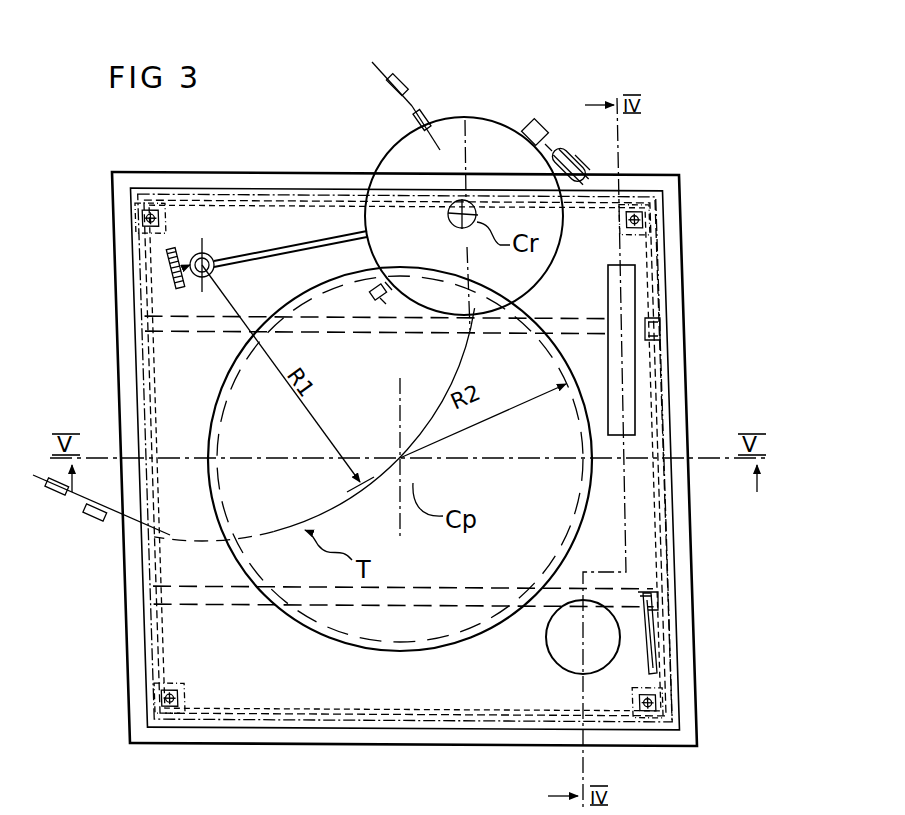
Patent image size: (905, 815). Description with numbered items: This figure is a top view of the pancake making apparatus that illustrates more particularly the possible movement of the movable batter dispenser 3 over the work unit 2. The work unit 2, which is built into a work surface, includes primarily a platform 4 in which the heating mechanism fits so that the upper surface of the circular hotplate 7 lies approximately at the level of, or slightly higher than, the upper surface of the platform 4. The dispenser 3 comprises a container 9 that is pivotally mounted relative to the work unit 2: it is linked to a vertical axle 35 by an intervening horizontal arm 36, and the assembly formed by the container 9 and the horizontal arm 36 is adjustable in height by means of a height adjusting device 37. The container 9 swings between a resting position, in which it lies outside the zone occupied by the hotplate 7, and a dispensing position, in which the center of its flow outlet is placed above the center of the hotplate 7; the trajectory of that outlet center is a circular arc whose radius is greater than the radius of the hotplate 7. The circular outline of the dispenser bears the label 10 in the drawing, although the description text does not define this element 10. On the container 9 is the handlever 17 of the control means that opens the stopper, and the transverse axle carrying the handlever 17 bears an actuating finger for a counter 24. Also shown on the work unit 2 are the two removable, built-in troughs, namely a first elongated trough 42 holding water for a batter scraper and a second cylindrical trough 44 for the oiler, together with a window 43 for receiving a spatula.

The work unit 2 is at (620, 150).
The movable batter dispenser 3 is at (441, 86).
The platform 4 is at (643, 543).
The hotplate 7 is at (383, 626).
The container 9 is at (519, 130).
The tool magazine disc 10 is at (477, 130).
The handlever 17 is at (578, 152).
The counter 24 is at (372, 302).
The vertical axle 35 is at (193, 280).
The horizontal arm 36 is at (302, 247).
The height adjusting device 37 is at (166, 262).
The first elongated trough 42 is at (622, 386).
The window 43 is at (648, 640).
The second cylindrical trough 44 is at (583, 665).